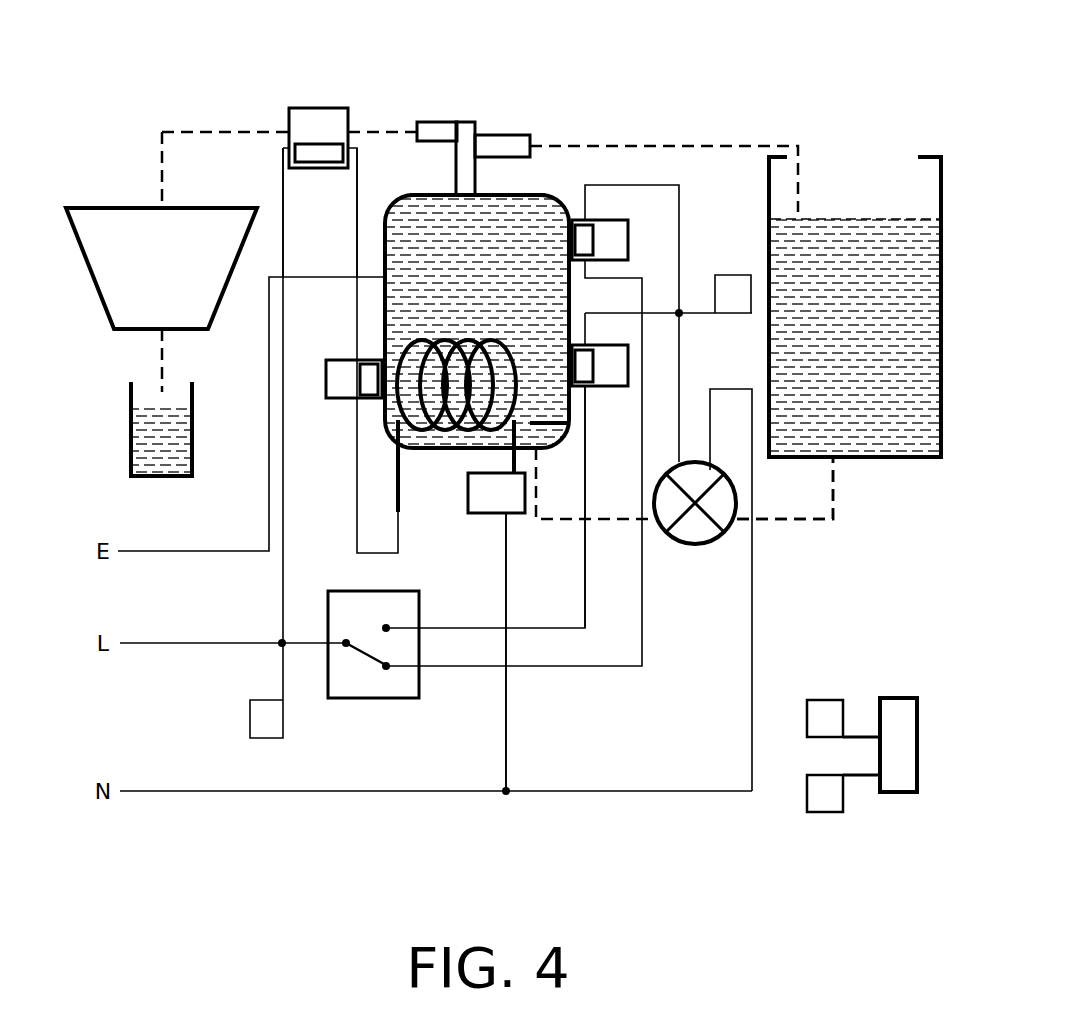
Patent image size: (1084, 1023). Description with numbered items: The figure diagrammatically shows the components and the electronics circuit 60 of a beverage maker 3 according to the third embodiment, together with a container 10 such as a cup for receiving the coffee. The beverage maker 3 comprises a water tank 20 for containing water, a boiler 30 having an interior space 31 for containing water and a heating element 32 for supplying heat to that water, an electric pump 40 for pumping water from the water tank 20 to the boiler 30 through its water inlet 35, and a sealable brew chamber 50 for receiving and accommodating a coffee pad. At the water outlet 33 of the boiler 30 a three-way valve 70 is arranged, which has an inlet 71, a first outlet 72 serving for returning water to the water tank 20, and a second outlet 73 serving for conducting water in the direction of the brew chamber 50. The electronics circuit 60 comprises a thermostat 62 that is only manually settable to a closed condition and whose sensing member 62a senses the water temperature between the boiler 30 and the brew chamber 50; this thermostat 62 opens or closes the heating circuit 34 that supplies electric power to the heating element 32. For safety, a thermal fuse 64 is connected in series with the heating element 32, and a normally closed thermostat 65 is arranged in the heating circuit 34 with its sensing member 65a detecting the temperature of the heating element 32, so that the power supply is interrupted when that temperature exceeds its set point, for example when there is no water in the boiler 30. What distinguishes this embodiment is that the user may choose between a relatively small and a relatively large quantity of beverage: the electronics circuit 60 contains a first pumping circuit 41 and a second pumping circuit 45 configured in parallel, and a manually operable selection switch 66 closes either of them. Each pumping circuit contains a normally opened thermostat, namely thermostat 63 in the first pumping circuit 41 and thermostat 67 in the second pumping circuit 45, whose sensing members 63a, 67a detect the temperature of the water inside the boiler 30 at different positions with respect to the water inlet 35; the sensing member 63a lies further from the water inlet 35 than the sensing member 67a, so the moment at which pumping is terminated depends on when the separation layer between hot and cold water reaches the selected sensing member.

The third beverage maker 3 is at (775, 76).
The container 10 is at (133, 440).
The water tank 20 is at (858, 183).
The boiler 30 is at (405, 215).
The interior space 31 is at (516, 240).
The heating element 32 is at (445, 430).
The water outlet 33 is at (460, 200).
The heating circuit 34 is at (265, 173).
The water inlet 35 is at (517, 457).
The electric pump 40 is at (693, 545).
The first pumping circuit 41 is at (524, 682).
The second pumping circuit 45 is at (597, 567).
The brew chamber 50 is at (146, 280).
The electronics circuit 60 is at (806, 556).
The thermostat 62 is at (318, 142).
The sensing member 62a is at (318, 160).
The normally opened thermostat 63 is at (649, 178).
The sensing member 63a is at (588, 240).
The thermal fuse 64 is at (510, 505).
The normally closed thermostat 65 is at (341, 392).
The sensing member 65a is at (368, 393).
The selection switch 66 is at (367, 660).
The normally opened thermostat 67 is at (649, 393).
The sensing member 67a is at (587, 368).
The three-way valve 70 is at (470, 106).
The inlet 71 is at (465, 145).
The first outlet 72 is at (503, 147).
The second outlet 73 is at (432, 130).